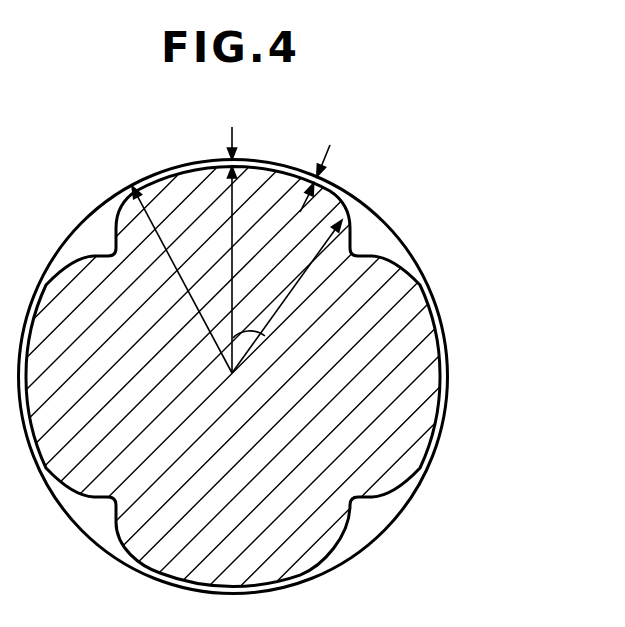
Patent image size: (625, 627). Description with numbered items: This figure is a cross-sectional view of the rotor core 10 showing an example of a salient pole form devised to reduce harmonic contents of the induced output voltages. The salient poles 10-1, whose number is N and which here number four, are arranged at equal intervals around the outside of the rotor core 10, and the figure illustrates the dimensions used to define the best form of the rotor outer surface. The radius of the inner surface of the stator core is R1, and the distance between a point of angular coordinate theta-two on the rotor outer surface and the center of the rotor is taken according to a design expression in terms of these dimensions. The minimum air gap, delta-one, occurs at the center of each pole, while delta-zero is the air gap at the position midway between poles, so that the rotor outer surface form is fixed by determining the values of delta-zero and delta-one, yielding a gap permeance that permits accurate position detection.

The rotor core 10 is at (266, 377).
The salient poles 10-1 is at (428, 395).
The radius of the inner surface of the stator core R1 is at (186, 291).